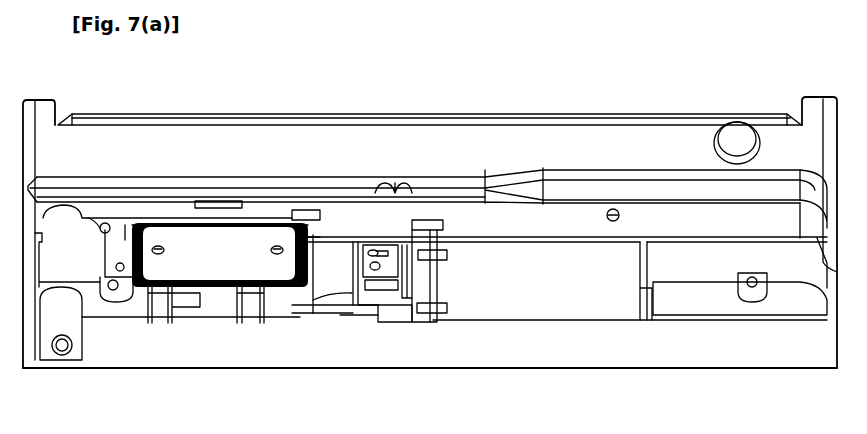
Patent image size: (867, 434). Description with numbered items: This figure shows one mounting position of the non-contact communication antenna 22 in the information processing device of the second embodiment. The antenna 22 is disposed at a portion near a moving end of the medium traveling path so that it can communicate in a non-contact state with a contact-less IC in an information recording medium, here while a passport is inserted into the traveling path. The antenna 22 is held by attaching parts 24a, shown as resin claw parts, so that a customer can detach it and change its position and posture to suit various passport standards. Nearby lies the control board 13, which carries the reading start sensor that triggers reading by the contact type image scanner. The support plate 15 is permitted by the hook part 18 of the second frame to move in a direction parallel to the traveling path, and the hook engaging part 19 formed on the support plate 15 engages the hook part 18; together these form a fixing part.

The control board 13 is at (205, 112).
The support plate 15 is at (537, 287).
The hook part 18 is at (437, 230).
The hook engaging part 19 is at (432, 220).
The non-contact communication antenna 22 is at (145, 287).
The attaching part for non-contact communication antenna 24a is at (160, 320).